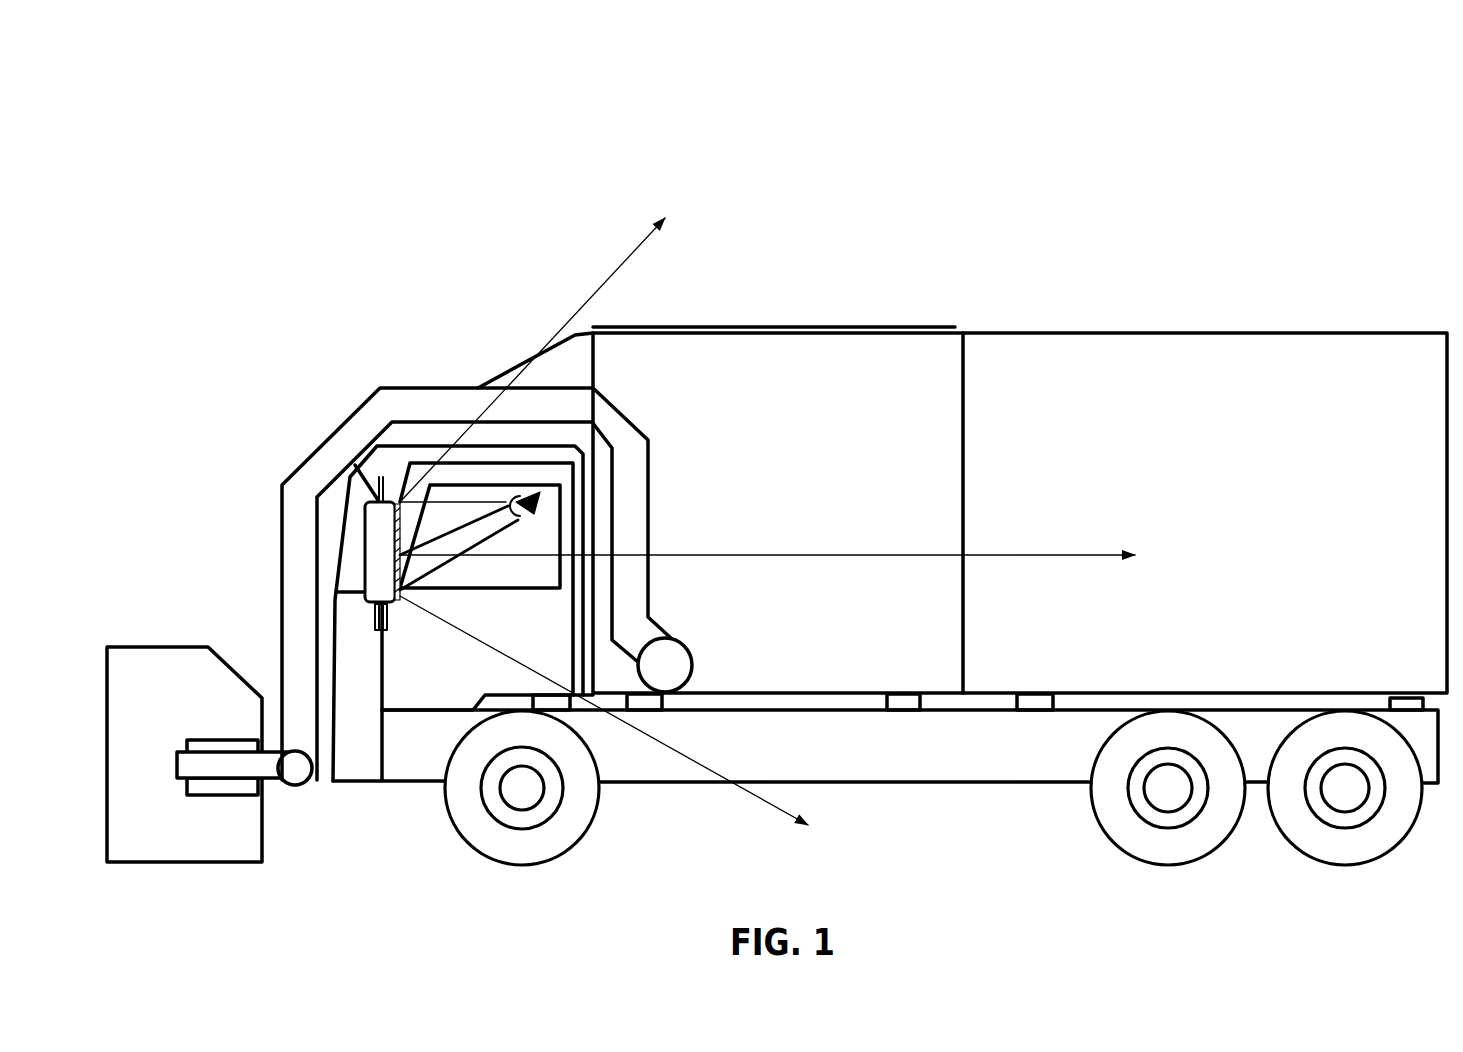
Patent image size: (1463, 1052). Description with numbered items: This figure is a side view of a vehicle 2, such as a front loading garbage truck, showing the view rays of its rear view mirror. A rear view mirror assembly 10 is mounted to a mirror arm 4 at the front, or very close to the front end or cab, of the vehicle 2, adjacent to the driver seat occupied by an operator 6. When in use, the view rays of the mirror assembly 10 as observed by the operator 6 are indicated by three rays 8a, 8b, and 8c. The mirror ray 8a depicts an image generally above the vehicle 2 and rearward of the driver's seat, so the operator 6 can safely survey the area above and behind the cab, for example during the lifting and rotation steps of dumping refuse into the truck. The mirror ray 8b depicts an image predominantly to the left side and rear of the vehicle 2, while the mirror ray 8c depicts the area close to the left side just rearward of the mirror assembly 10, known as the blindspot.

The vehicle 2 is at (1316, 132).
The mirror arm 4 is at (377, 626).
The operator 6 is at (538, 506).
The mirror ray 8a is at (532, 358).
The mirror ray 8b is at (767, 535).
The mirror ray 8c is at (604, 717).
The rear view mirror assembly 10 is at (363, 571).